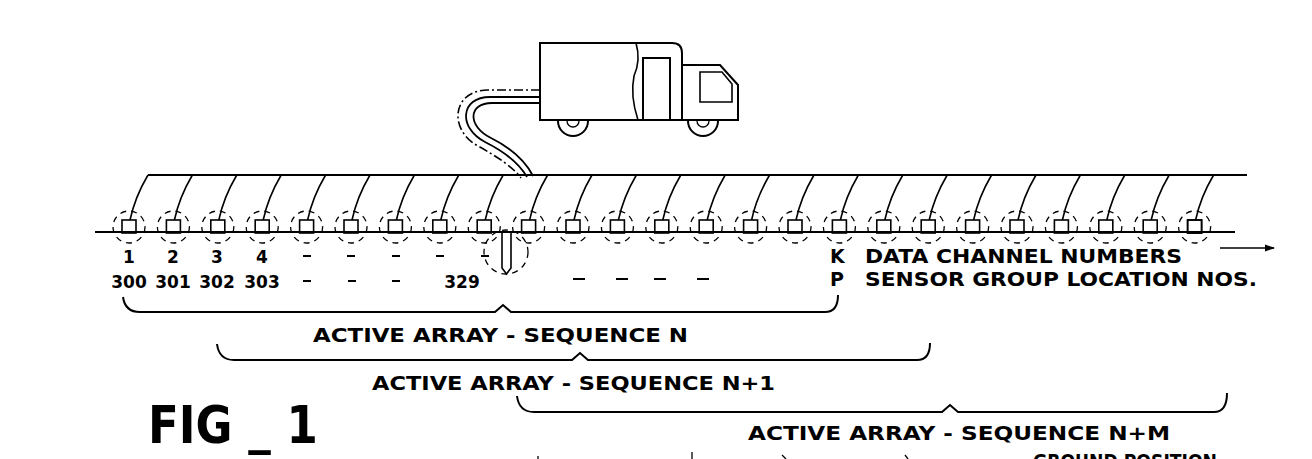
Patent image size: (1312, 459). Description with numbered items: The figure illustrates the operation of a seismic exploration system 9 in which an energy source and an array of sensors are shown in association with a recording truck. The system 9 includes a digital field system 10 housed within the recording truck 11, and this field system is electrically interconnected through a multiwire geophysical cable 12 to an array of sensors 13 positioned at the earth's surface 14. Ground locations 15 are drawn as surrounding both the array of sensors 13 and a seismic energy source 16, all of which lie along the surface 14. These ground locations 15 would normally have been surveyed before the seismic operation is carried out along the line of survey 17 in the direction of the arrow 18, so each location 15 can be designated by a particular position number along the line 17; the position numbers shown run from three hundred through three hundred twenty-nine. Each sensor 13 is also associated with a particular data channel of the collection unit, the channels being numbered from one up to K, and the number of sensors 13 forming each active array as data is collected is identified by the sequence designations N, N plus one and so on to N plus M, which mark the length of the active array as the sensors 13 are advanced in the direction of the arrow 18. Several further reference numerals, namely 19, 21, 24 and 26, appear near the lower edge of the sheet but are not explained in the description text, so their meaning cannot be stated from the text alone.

The seismic exploration system 9 is at (686, 89).
The digital field system 10 is at (660, 100).
The recording truck 11 is at (722, 77).
The multiwire geophysical cable 12 is at (447, 118).
The sensors 13 is at (845, 220).
The earth's surface 14 is at (98, 229).
The ground locations 15 is at (160, 214).
The seismic energy source 16 is at (516, 278).
The line of survey 17 is at (1247, 215).
The arrow 18 is at (1242, 252).
The ground position indicator 19 is at (537, 453).
The ground position marker 21 is at (796, 452).
The ground position display 24 is at (690, 446).
The ground position scale 26 is at (890, 452).